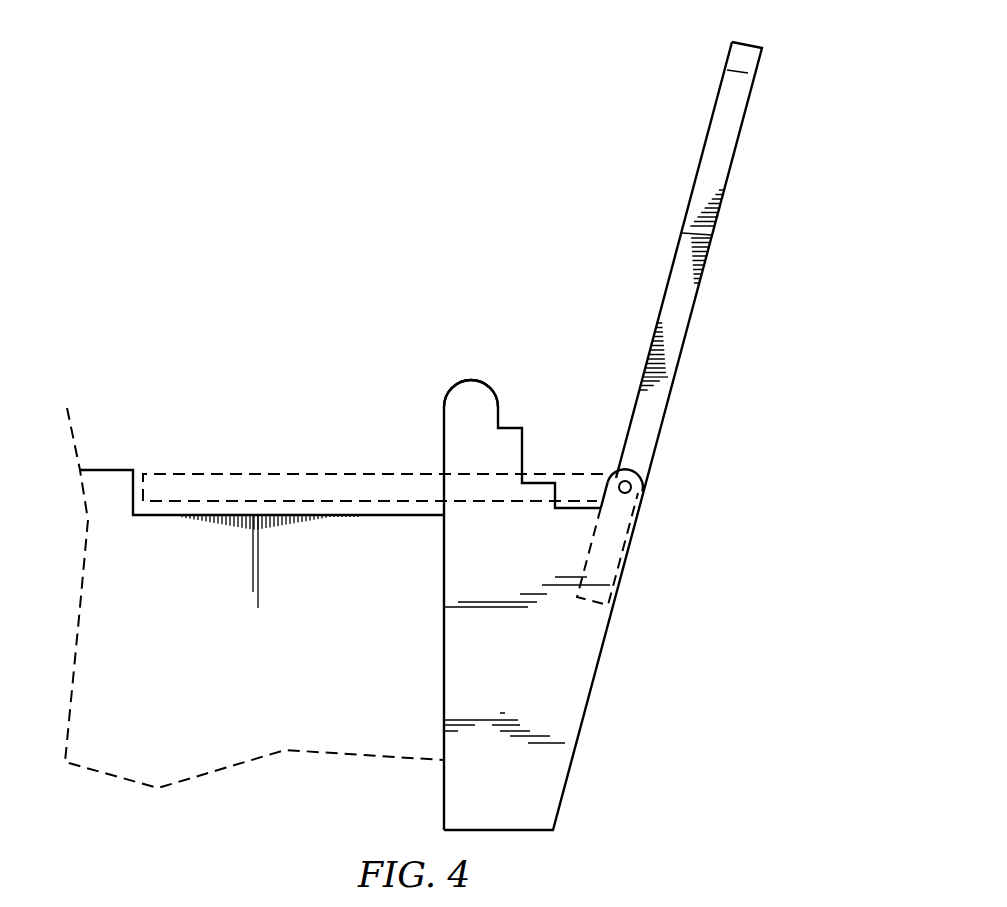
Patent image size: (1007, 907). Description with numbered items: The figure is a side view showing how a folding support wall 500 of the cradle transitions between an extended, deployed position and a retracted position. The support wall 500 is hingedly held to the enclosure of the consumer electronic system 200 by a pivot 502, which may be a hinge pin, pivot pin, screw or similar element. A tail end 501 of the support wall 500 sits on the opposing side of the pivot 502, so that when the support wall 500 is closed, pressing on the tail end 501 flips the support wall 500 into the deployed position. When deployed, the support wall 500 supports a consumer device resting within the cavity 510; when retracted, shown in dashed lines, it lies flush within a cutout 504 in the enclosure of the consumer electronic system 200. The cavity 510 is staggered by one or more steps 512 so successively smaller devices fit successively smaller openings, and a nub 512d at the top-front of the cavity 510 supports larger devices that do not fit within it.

The consumer electronic system 200 is at (105, 470).
The support wall 500 is at (728, 93).
The tail end 501 is at (612, 546).
The pivot 502 is at (632, 492).
The cutout 504 is at (263, 457).
The cavity 510 is at (577, 182).
The step 512 is at (493, 598).
The nub 512d is at (457, 387).